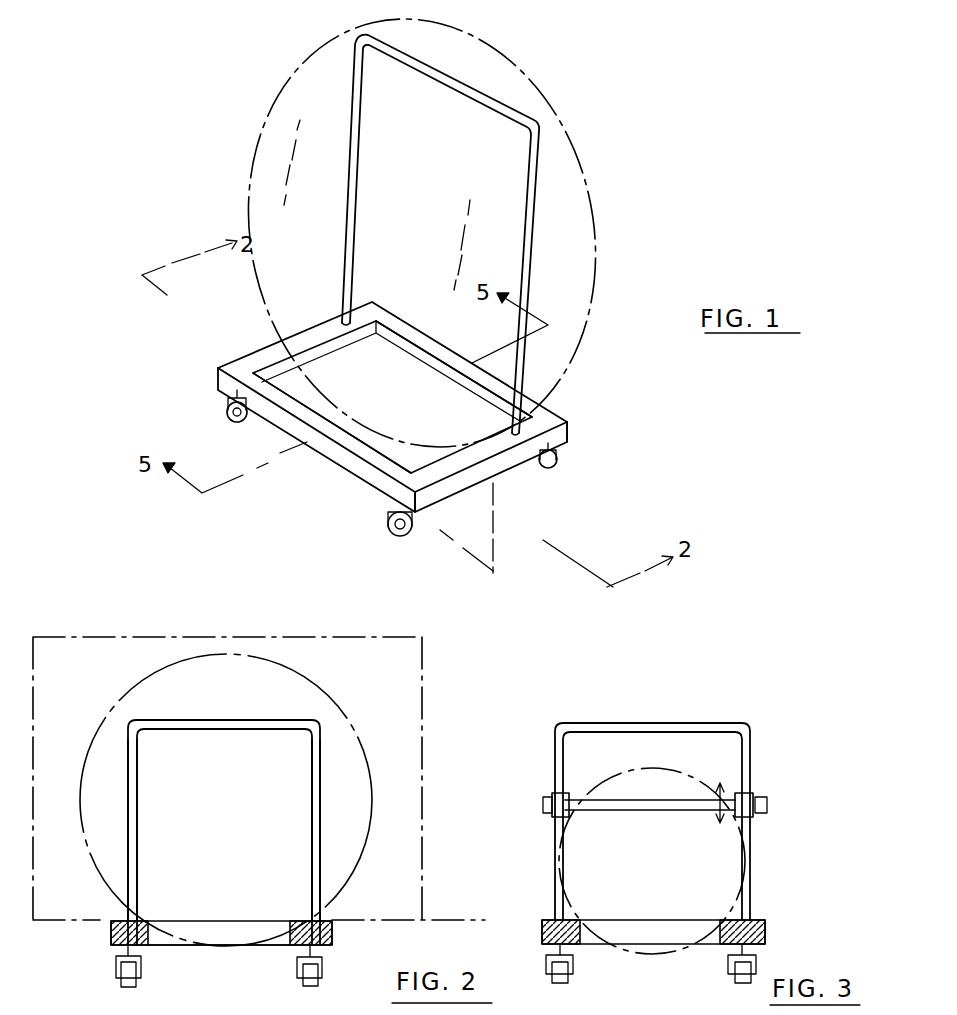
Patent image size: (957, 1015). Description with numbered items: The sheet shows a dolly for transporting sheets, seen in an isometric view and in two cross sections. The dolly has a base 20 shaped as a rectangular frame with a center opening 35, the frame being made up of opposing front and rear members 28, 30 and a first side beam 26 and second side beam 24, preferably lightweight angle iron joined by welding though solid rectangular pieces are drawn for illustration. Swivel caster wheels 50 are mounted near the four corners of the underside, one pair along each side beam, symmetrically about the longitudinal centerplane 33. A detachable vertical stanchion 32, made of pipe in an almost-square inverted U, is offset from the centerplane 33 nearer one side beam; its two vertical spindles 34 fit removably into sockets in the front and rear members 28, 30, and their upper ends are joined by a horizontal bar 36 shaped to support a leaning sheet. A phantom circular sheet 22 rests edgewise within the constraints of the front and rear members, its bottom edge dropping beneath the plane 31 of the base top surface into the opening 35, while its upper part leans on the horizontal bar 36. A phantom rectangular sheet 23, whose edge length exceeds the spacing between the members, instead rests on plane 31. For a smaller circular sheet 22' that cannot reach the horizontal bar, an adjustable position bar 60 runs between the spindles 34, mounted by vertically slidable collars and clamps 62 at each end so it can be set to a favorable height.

In FIG. 1, the base 20 is at (572, 404).
In FIG. 3, the base 20 is at (775, 917).
In FIG. 1, the circular sheet 22 is at (422, 241).
In FIG. 2, the circular sheet 22 is at (233, 800).
In FIG. 3, the smaller circular sheet 22' is at (652, 844).
In FIG. 2, the rectangular sheet 23 is at (424, 668).
In FIG. 1, the second side beam 24 is at (320, 443).
In FIG. 1, the first side beam 26 is at (448, 355).
In FIG. 2, the first side beam 26 is at (265, 946).
In FIG. 1, the front member 28 is at (447, 493).
In FIG. 2, the front member 28 is at (334, 940).
In FIG. 1, the rear member 30 is at (262, 353).
In FIG. 2, the rear member 30 is at (110, 937).
In FIG. 2, the plane of the top surface 31 is at (447, 920).
In FIG. 1, the stanchion 32 is at (558, 224).
In FIG. 2, the stanchion 32 is at (332, 806).
In FIG. 3, the stanchion 32 is at (765, 758).
In FIG. 1, the longitudinal centerplane 33 is at (494, 522).
In FIG. 2, the vertical spindles 34 is at (136, 820).
In FIG. 1, the center opening 35 is at (378, 371).
In FIG. 2, the center opening 35 is at (176, 949).
In FIG. 2, the horizontal bar 36 is at (222, 720).
In FIG. 1, the swivel caster wheels 50 is at (540, 470).
In FIG. 3, the adjustable position bar 60 is at (640, 810).
In FIG. 3, the clamp 62 is at (768, 786).